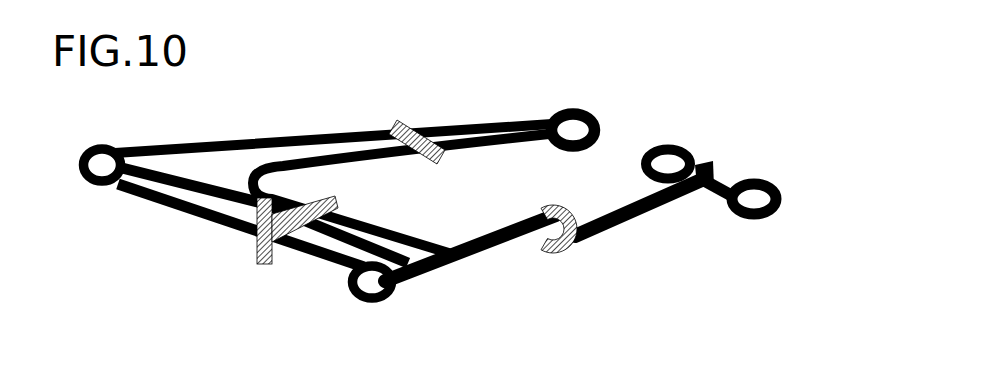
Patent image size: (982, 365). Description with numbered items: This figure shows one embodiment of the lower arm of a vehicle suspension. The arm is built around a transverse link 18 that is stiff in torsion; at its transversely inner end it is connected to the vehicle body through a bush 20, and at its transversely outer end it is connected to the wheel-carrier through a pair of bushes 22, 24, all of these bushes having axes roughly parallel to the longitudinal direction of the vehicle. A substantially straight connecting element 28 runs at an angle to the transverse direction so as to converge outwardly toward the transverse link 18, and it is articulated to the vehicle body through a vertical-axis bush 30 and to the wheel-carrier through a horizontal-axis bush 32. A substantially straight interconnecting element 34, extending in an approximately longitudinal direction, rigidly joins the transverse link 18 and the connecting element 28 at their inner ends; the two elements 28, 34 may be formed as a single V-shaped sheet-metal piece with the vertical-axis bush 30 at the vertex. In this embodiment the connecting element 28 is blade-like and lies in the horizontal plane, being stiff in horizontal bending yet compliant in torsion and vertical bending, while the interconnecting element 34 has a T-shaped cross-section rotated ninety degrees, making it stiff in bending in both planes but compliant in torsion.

The transverse link 18 is at (623, 222).
The bush 20 is at (350, 295).
The bush 22 is at (764, 177).
The bush 24 is at (677, 143).
The connecting element 28 is at (288, 137).
The vertical-axis bush 30 is at (84, 150).
The horizontal-axis bush 32 is at (600, 115).
The interconnecting element 34 is at (203, 200).